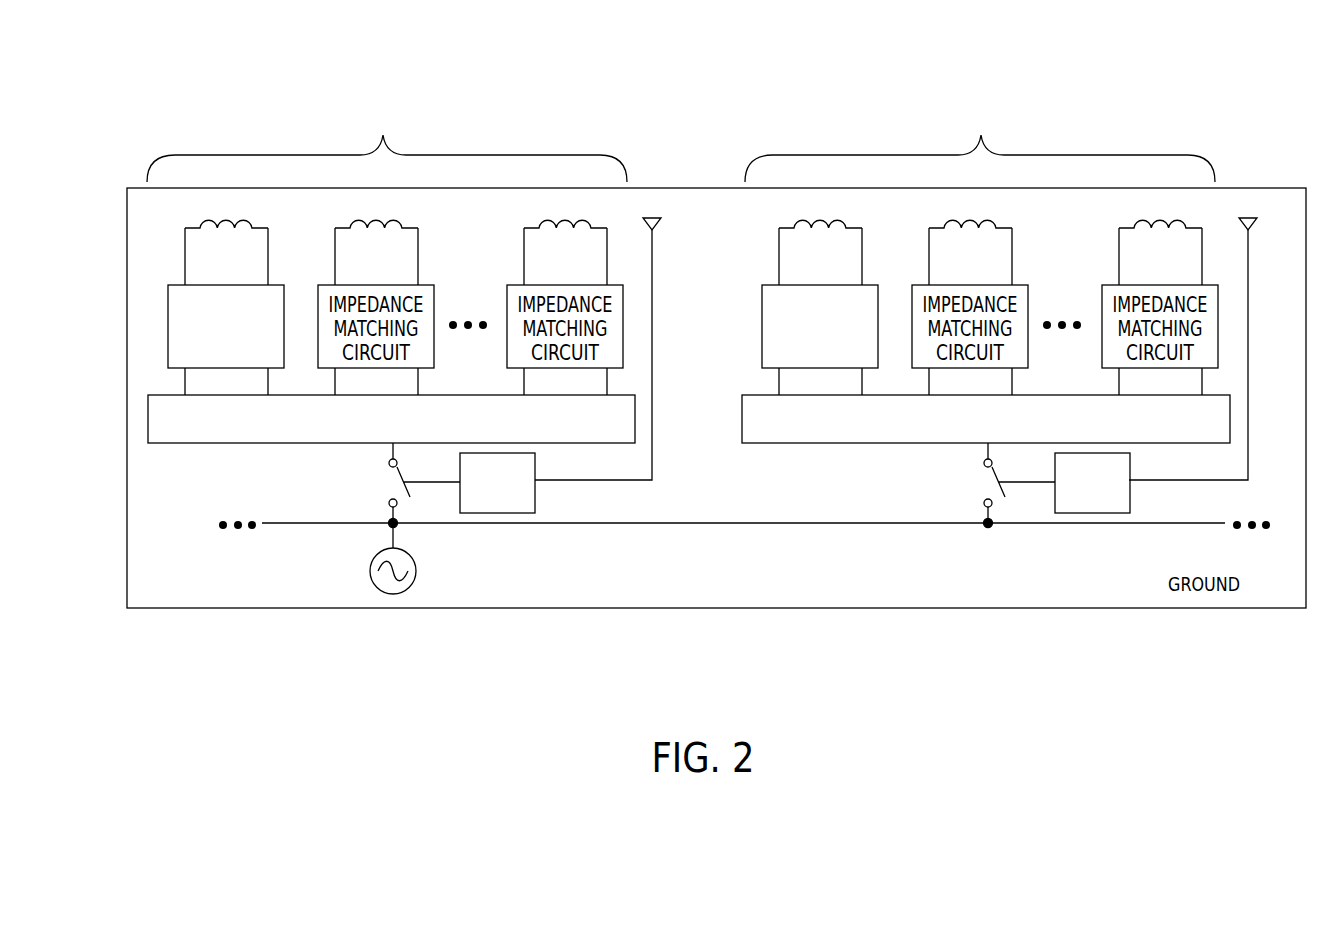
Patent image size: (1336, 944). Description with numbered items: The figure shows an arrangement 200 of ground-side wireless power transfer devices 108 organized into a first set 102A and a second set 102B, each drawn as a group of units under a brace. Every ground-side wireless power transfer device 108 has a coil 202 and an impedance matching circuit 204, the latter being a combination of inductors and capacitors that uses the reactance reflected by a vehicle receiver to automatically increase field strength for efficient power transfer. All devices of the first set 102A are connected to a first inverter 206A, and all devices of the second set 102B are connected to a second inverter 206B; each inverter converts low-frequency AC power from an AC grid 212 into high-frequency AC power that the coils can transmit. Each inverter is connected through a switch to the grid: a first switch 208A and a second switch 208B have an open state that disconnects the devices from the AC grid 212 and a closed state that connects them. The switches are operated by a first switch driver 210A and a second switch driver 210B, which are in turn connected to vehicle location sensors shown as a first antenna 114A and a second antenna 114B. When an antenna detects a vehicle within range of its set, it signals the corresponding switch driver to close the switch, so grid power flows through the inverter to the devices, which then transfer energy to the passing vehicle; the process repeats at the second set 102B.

The arrangement 200 is at (150, 82).
The first set 102A is at (387, 143).
The second set 102B is at (980, 143).
The first antenna 114A is at (672, 226).
The second antenna 114B is at (1266, 226).
The ground-side coil 202 is at (185, 252).
The impedance matching circuit 204 is at (168, 302).
The ground-side wireless power transfer device 108 is at (150, 362).
The first inverter 206A is at (150, 432).
The second inverter 206B is at (755, 430).
The first switch 208A is at (365, 510).
The second switch 208B is at (960, 510).
The first switch driver 210A is at (525, 515).
The second switch driver 210B is at (1120, 515).
The AC grid 212 is at (396, 620).